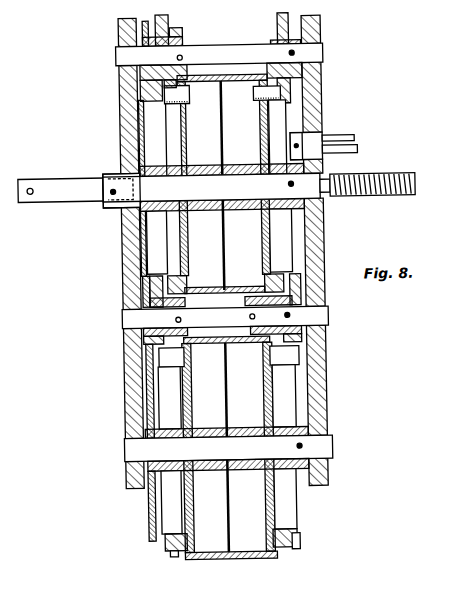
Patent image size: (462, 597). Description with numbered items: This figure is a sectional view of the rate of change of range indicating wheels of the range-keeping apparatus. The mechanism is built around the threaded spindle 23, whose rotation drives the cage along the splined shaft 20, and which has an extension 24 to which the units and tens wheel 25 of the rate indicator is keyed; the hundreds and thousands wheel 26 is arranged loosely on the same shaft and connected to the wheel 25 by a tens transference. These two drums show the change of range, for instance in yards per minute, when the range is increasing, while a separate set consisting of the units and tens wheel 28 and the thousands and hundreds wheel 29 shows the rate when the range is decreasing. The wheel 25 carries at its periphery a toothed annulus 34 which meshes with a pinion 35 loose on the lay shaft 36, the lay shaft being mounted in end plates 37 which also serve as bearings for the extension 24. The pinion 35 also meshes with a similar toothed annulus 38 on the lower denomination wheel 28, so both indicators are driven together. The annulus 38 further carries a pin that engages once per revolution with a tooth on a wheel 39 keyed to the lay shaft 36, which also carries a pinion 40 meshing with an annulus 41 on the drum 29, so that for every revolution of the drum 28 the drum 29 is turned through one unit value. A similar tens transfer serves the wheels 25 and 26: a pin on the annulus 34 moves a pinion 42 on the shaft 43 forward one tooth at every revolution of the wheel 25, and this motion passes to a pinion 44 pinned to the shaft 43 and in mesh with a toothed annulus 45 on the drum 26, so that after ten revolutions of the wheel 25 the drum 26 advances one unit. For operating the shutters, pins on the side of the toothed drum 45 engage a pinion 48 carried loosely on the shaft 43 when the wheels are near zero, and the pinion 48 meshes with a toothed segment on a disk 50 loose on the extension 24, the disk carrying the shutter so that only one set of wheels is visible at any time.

The splined shaft 20 is at (339, 140).
The threaded spindle 23 is at (387, 200).
The extension 24 is at (174, 189).
The units and tens wheel 25 is at (290, 113).
The hundreds and thousands wheel 26 is at (217, 76).
The units and tens wheel 28 is at (245, 547).
The thousands and hundreds wheel 29 is at (218, 548).
The toothed annulus 34 is at (286, 93).
The pinion 35 is at (250, 318).
The lay shaft 36 is at (318, 320).
The end plates 37 is at (132, 366).
The toothed annulus 38 is at (283, 549).
The wheel 39 is at (323, 298).
The pinion 40 is at (143, 304).
The annulus 41 is at (159, 541).
The pinion 42 is at (286, 31).
The shaft 43 is at (316, 58).
The pinion 44 is at (178, 40).
The toothed annulus 45 is at (171, 111).
The pinion 48 is at (124, 39).
The disk 50 is at (142, 124).